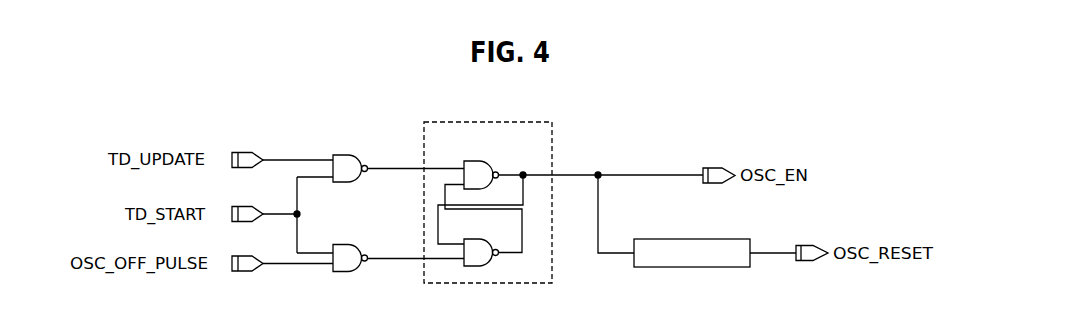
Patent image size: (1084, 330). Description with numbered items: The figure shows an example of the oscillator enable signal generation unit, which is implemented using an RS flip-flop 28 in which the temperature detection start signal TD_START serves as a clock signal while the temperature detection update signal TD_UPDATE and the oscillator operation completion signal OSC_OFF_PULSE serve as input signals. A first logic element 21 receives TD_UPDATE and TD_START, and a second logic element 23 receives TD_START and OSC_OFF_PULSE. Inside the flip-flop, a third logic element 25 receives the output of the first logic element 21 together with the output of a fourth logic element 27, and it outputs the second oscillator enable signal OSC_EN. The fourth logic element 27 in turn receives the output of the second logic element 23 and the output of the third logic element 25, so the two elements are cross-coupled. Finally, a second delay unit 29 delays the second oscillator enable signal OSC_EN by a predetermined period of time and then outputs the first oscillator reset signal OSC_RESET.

The first logic element 21 is at (357, 154).
The second logic element 23 is at (357, 244).
The third logic element 25 is at (489, 160).
The fourth logic element 27 is at (489, 238).
The RS flip-flop 28 is at (552, 122).
The second delay unit 29 is at (718, 239).